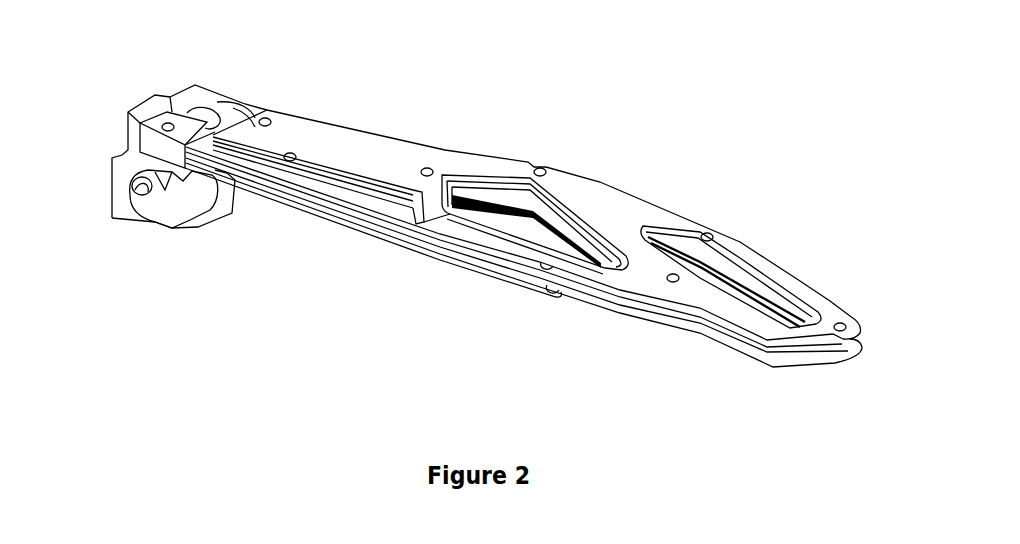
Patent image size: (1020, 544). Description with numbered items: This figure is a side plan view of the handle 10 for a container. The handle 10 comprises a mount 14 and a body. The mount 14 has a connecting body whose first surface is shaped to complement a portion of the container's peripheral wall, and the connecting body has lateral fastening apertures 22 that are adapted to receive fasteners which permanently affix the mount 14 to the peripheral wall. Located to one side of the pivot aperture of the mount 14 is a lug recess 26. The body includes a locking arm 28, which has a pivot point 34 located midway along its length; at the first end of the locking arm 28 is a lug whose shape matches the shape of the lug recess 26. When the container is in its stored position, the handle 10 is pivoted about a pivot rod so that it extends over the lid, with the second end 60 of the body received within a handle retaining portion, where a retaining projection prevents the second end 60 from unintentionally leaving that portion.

The handle 10 is at (733, 438).
The mount 14 is at (106, 126).
The lateral fastening apertures 22 is at (177, 190).
The lug recess 26 is at (110, 175).
The locking arm 28 is at (343, 205).
The pivot point 34 is at (335, 125).
The second end 60 is at (817, 236).